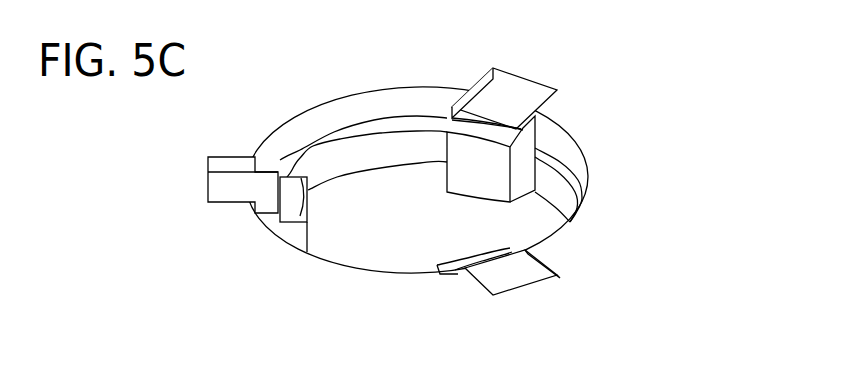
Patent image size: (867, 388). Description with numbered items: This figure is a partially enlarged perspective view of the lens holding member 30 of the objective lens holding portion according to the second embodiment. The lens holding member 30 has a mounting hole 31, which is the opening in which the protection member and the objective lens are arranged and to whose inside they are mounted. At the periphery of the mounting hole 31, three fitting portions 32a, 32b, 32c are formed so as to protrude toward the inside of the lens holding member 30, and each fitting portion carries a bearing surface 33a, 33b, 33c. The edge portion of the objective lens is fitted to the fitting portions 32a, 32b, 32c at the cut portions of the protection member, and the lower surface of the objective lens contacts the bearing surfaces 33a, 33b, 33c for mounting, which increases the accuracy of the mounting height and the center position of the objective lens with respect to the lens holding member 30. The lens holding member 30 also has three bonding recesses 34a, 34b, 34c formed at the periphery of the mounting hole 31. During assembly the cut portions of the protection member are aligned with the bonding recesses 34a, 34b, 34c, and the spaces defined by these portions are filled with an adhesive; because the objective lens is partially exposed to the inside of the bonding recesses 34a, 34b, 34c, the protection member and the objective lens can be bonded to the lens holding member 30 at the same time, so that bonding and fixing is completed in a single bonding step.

The lens holding member 30 is at (385, 195).
The mounting hole 31 is at (378, 256).
The fitting portion 32a is at (292, 183).
The fitting portion 32b is at (478, 252).
The fitting portion 32c is at (464, 128).
The bearing surface 33a is at (283, 240).
The bearing surface 33b is at (535, 236).
The bearing surface 33c is at (548, 133).
The bonding recess 34a is at (218, 188).
The bonding recess 34b is at (517, 275).
The bonding recess 34c is at (505, 98).